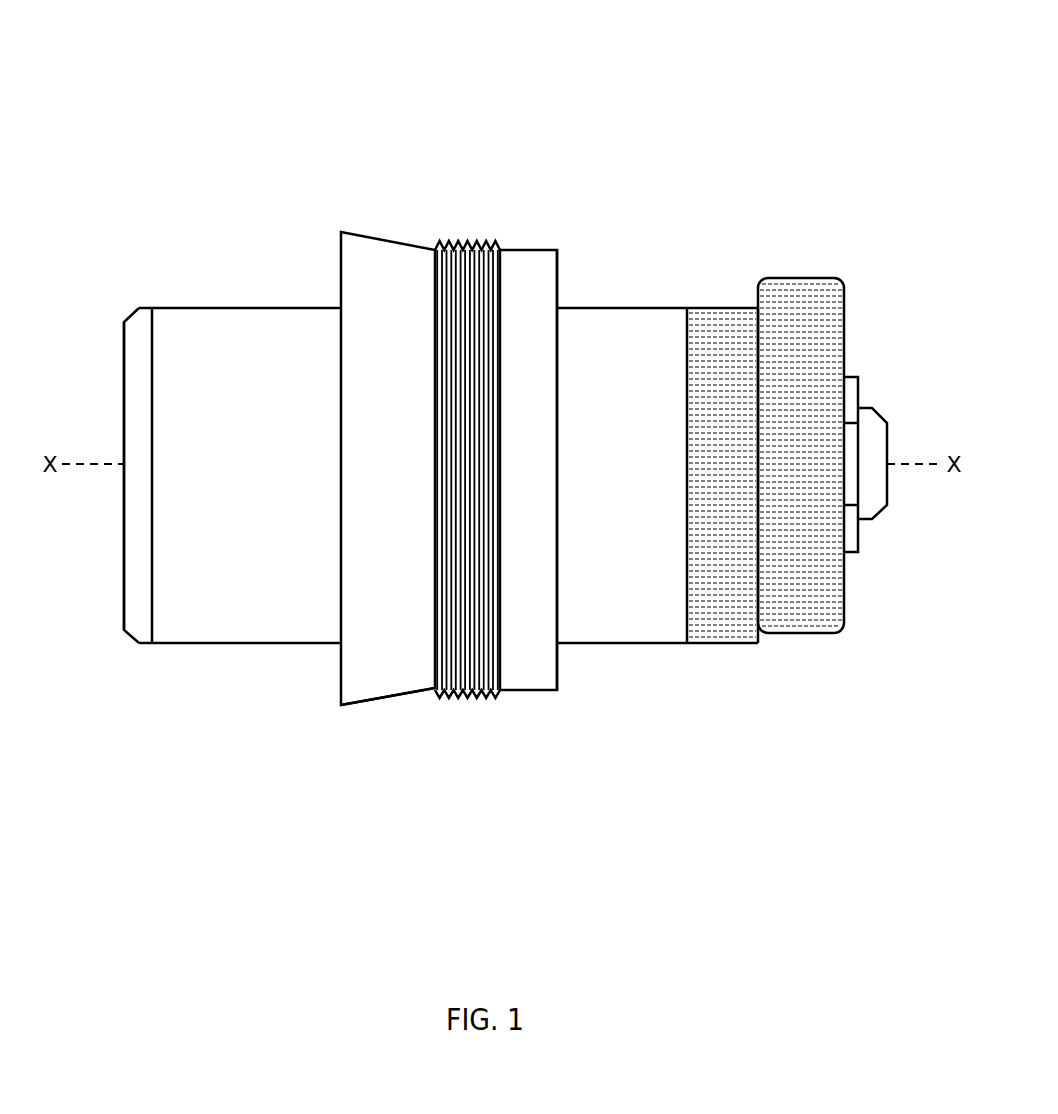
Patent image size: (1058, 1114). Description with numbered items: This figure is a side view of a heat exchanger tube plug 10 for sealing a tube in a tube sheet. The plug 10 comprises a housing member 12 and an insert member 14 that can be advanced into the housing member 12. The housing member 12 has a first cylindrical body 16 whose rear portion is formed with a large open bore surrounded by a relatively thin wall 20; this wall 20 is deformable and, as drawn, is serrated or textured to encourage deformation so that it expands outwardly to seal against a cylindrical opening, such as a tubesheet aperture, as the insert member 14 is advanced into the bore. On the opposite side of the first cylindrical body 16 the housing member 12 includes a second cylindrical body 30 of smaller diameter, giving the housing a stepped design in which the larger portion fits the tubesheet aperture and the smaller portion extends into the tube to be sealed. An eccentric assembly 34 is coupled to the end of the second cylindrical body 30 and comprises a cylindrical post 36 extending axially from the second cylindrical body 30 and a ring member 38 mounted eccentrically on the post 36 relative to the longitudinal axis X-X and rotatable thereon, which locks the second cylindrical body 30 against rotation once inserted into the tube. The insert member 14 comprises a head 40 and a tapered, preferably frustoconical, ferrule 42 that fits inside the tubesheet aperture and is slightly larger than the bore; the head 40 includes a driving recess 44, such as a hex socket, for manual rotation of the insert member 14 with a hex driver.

The heat exchanger tube plug 10 is at (536, 108).
The housing member 12 is at (522, 250).
The insert member 14 is at (366, 236).
The first cylindrical body 16 is at (558, 688).
The wall 20 is at (466, 698).
The second cylindrical body 30 is at (625, 643).
The eccentric assembly 34 is at (793, 278).
The cylindrical post 36 is at (880, 520).
The ring member 38 is at (858, 377).
The head 40 is at (200, 643).
The tapered ferrule 42 is at (383, 705).
The driving recess 44 is at (106, 534).